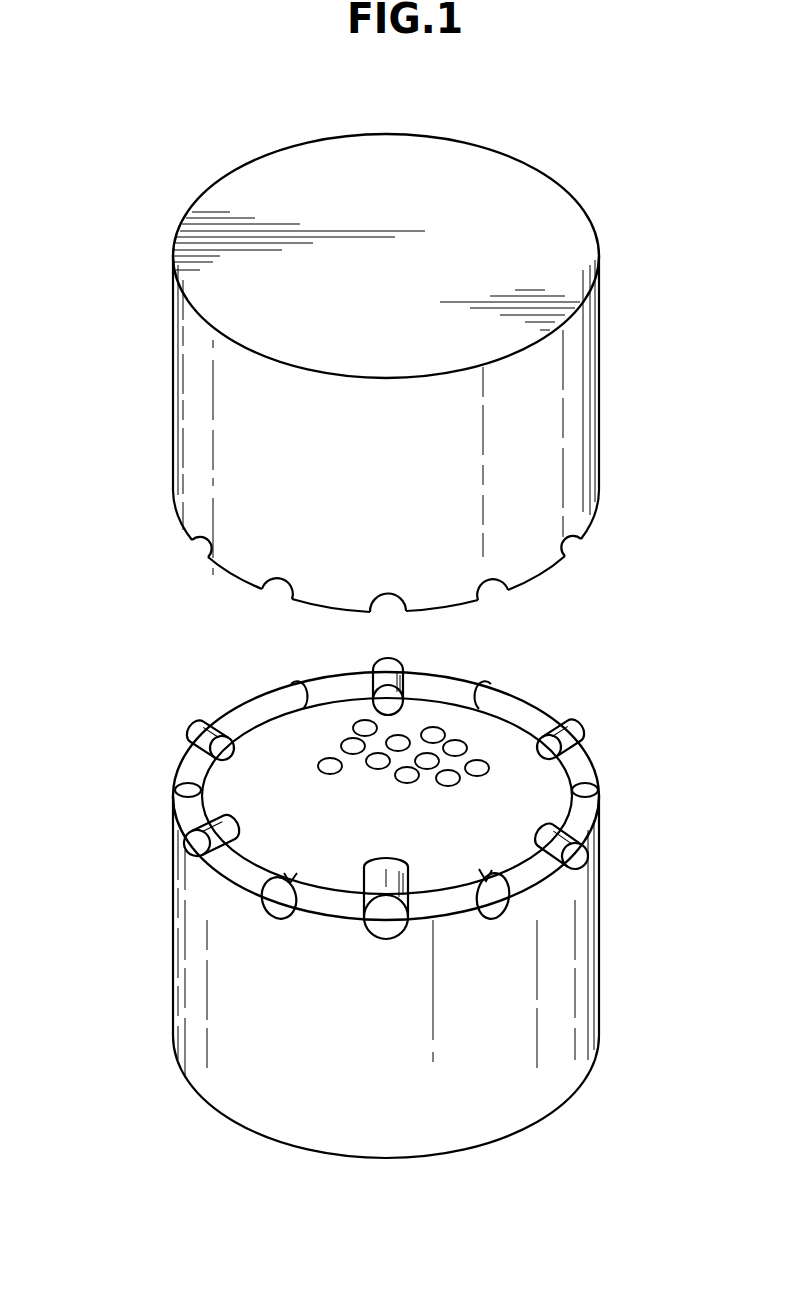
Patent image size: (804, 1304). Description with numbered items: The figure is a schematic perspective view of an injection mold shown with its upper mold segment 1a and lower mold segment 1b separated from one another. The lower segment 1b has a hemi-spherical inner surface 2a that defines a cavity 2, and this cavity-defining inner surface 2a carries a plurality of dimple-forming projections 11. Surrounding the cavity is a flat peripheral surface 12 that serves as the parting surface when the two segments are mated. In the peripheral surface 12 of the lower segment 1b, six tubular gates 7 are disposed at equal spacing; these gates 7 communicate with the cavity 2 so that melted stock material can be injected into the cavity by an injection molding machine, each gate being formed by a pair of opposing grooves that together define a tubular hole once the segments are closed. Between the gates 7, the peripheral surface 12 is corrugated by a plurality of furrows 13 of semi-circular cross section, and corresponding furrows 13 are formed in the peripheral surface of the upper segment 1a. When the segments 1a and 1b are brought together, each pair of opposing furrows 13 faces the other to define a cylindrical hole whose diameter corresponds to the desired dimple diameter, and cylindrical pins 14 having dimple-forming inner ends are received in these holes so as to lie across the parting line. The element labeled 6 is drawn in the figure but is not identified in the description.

The upper mold segment 1a is at (600, 405).
The lower mold segment 1b is at (590, 943).
The cavity 2 is at (252, 762).
The hemi-spherical inner surface 2a is at (287, 847).
The pad 6 is at (497, 912).
The tubular gate 7 is at (490, 878).
The dimple-forming projection 11 is at (462, 742).
The peripheral surface 12 is at (540, 577).
The furrow 13 is at (495, 592).
The cylindrical pin 14 is at (583, 727).